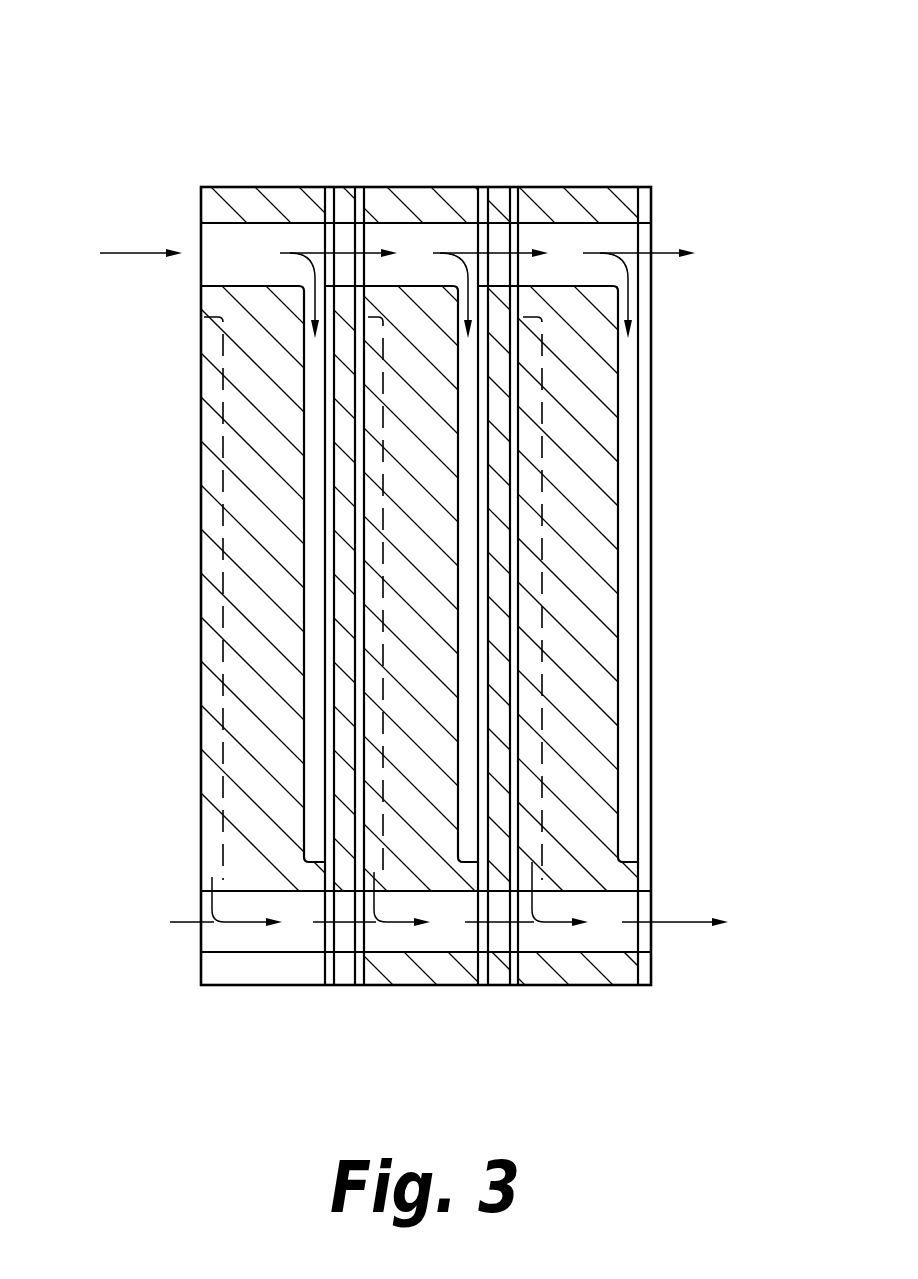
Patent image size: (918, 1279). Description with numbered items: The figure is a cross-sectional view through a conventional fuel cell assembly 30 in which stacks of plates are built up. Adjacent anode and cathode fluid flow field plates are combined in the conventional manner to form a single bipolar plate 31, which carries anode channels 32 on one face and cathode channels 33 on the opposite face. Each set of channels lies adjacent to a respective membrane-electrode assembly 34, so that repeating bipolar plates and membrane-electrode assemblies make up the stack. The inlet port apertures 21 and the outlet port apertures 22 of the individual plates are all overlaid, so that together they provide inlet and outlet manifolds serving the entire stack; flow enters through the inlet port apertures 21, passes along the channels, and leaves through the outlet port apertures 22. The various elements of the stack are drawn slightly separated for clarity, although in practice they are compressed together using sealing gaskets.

The fuel cell assembly 30 is at (186, 126).
The bipolar plate 31 is at (270, 205).
The anode channels 32 is at (312, 492).
The cathode channels 33 is at (532, 513).
The membrane-electrode assembly 34 is at (340, 203).
The inlet port apertures 21 is at (117, 252).
The outlet port apertures 22 is at (708, 917).